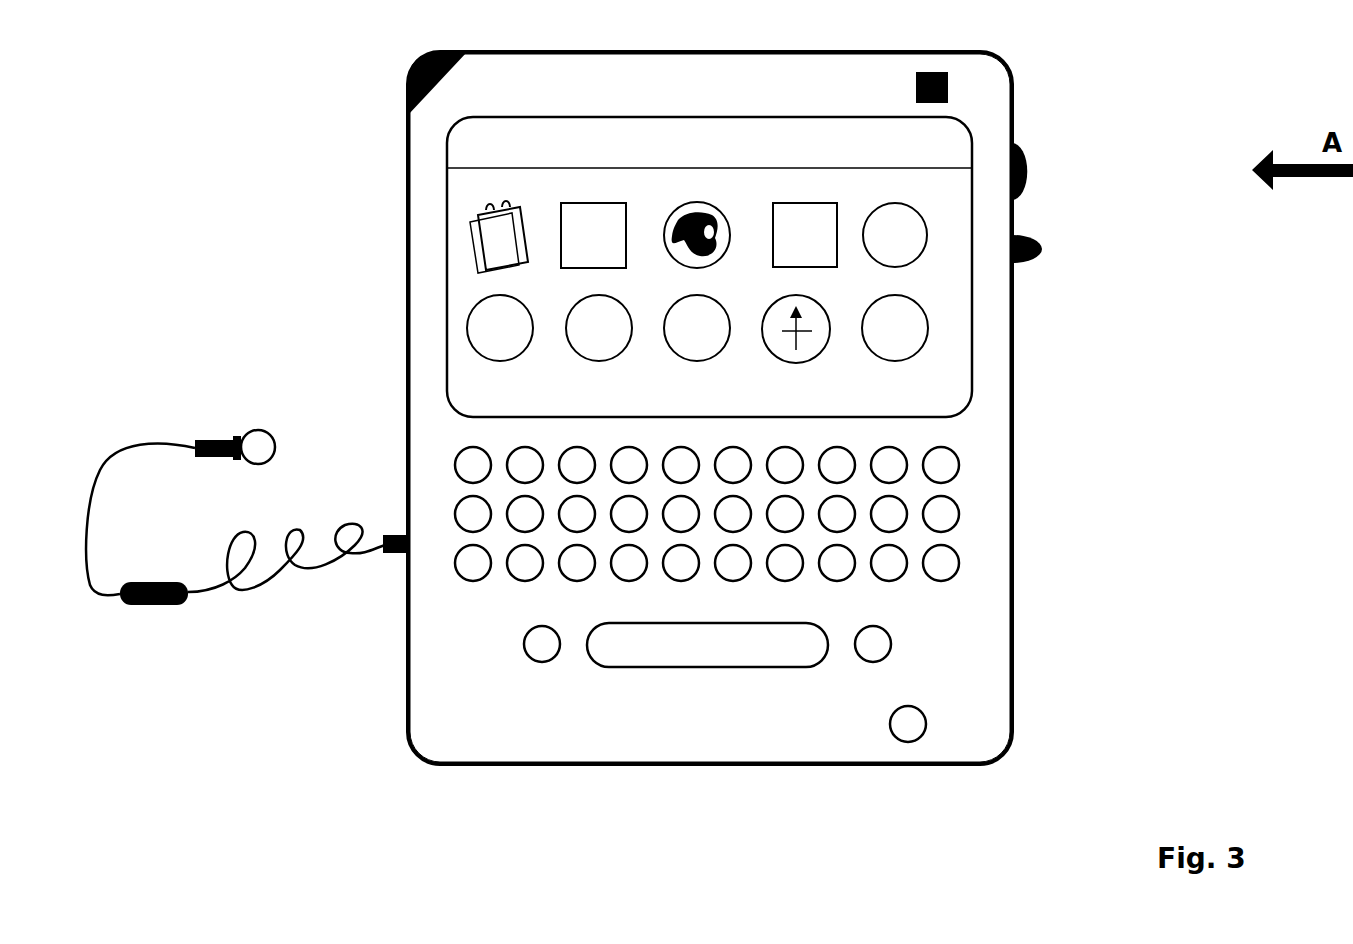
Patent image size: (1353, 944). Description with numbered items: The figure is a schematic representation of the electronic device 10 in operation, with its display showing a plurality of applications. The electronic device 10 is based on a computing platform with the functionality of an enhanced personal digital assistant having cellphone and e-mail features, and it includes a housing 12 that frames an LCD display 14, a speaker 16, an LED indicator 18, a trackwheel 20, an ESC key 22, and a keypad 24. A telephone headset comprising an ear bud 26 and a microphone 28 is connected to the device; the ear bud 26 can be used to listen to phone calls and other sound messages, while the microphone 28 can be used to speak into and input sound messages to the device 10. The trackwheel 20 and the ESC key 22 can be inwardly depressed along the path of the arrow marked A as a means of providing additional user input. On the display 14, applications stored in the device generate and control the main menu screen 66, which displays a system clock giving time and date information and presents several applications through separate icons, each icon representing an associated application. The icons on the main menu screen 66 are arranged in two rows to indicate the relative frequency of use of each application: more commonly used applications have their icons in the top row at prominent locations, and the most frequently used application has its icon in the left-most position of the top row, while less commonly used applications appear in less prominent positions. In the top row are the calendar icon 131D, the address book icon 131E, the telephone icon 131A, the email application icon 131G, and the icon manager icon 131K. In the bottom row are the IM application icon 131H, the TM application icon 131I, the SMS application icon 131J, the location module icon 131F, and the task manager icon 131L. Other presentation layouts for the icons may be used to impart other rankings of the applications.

The electronic device 10 is at (592, 768).
The housing 12 is at (842, 737).
The LCD display 14 is at (950, 367).
The speaker 16 is at (388, 83).
The LED indicator 18 is at (968, 84).
The trackwheel 20 is at (1048, 171).
The ESC key 22 is at (1053, 251).
The keypad 24 is at (960, 514).
The ear bud 26 is at (275, 424).
The microphone 28 is at (153, 570).
The main menu screen 66 is at (806, 292).
The telephone icon 131A is at (717, 271).
The calendar icon 131D is at (530, 266).
The address book icon 131E is at (625, 274).
The location module icon 131F is at (824, 366).
The email application icon 131G is at (831, 275).
The IM application icon 131H is at (528, 366).
The TM application icon 131I is at (629, 366).
The SMS application icon 131J is at (726, 366).
The icon manager icon 131K is at (927, 269).
The task manager icon 131L is at (924, 366).